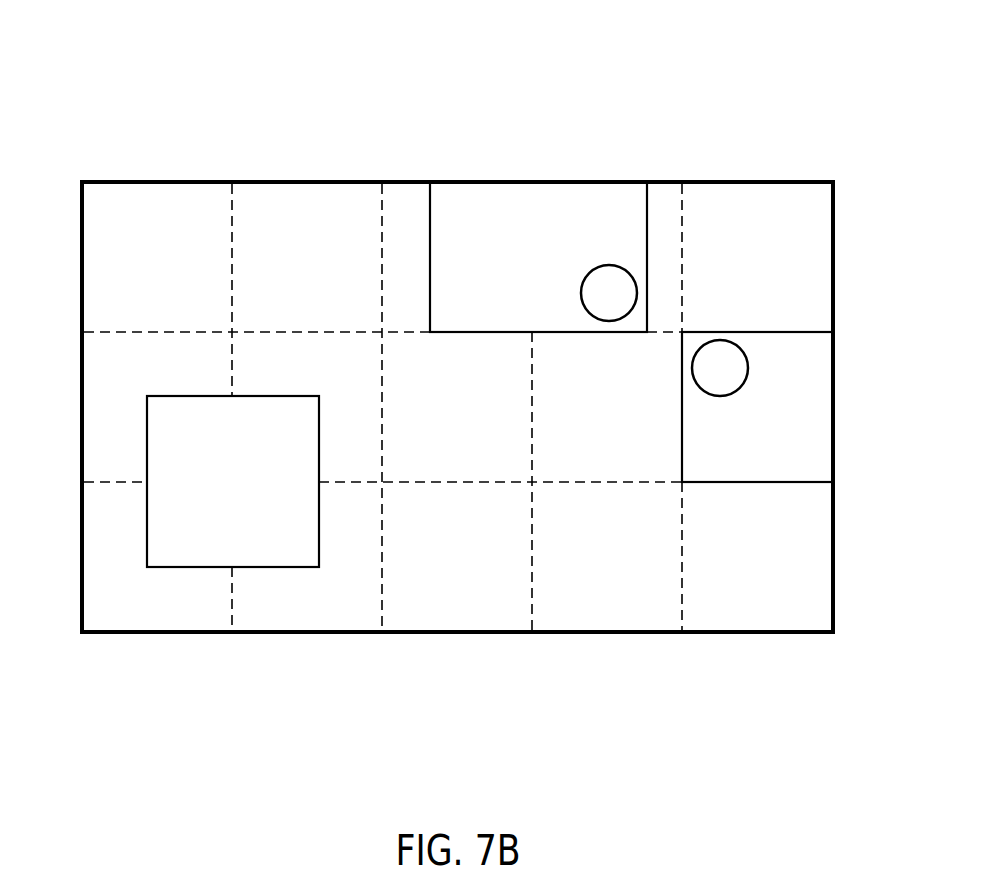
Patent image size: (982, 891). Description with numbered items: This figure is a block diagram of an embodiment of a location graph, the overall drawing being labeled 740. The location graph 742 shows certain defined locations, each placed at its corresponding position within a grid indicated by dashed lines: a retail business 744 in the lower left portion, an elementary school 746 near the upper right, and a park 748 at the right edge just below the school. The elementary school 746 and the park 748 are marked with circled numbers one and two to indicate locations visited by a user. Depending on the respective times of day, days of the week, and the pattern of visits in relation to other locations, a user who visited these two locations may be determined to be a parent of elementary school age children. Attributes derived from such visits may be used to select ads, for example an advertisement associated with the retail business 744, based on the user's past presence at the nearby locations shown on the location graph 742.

The map display 740 is at (133, 46).
The location graph 742 is at (292, 178).
The retail business 744 is at (280, 557).
The elementary school 746 is at (647, 257).
The park 748 is at (742, 481).